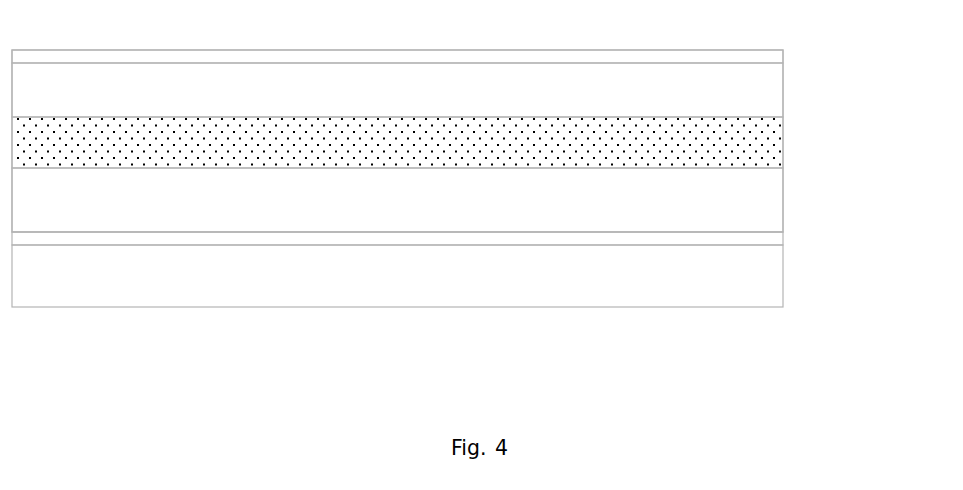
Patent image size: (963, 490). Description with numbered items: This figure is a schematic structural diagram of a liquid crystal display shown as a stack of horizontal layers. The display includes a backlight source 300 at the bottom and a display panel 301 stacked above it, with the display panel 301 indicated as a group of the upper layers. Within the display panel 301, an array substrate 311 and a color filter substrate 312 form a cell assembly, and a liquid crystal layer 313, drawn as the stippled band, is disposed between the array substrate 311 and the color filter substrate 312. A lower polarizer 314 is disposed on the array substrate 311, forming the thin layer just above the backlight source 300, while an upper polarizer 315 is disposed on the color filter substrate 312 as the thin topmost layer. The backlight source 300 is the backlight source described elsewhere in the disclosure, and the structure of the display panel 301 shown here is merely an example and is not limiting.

The backlight source 300 is at (770, 283).
The display panel 301 is at (873, 35).
The array substrate 311 is at (773, 200).
The color filter substrate 312 is at (771, 103).
The liquid crystal layer 313 is at (772, 155).
The lower polarizer 314 is at (778, 242).
The upper polarizer 315 is at (770, 58).